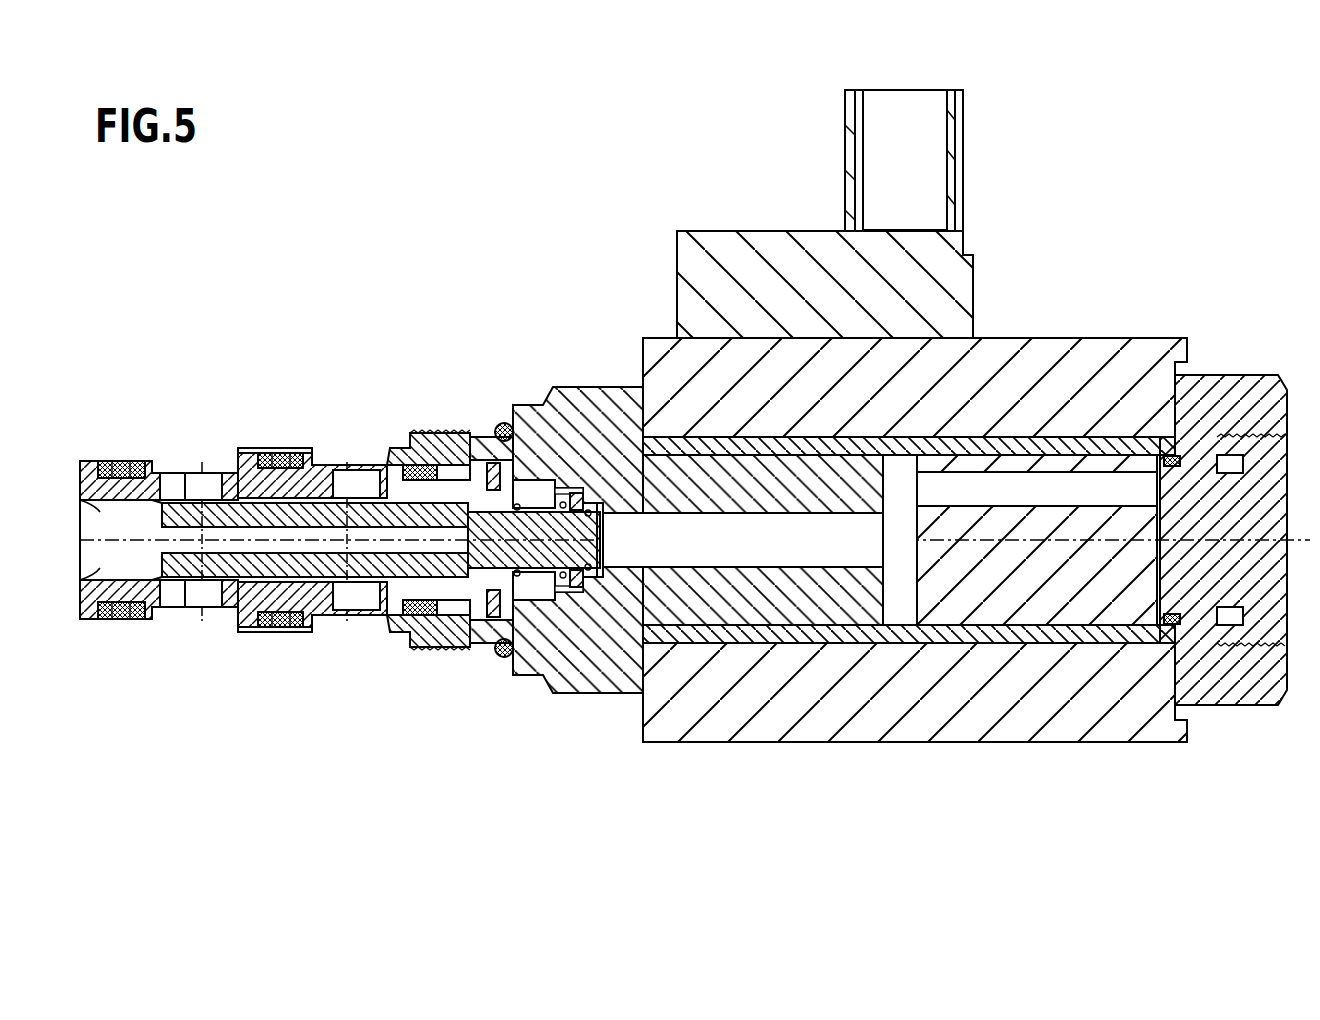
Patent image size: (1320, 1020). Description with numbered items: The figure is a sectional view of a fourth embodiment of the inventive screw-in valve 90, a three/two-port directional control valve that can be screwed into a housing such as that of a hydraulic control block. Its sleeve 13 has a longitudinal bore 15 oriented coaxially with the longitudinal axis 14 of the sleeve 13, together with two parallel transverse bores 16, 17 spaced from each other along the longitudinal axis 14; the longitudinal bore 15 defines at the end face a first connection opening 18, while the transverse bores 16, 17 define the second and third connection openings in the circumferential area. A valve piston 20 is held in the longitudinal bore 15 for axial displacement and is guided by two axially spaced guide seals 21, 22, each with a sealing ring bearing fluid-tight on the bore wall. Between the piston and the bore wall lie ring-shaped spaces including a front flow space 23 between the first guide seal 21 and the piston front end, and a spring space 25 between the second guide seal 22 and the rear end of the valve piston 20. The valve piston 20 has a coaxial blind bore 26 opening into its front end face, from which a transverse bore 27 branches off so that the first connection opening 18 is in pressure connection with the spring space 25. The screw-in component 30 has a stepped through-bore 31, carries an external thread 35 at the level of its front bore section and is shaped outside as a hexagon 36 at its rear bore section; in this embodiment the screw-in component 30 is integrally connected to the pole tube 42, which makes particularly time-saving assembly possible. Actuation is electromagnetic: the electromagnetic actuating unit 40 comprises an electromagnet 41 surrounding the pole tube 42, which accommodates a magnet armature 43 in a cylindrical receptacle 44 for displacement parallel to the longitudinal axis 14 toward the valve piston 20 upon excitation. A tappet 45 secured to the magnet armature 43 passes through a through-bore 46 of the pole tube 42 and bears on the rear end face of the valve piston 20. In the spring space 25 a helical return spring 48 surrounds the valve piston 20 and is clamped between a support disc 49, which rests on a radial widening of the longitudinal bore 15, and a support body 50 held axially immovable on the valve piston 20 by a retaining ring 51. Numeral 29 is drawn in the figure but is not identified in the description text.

The sleeve 13 is at (300, 433).
The longitudinal axis 14 is at (88, 540).
The longitudinal bore 15 is at (88, 568).
The transverse bore 16 is at (190, 612).
The transverse bore 17 is at (332, 612).
The first connection opening 18 is at (88, 512).
The valve piston 20 is at (238, 582).
The guide seal 21 is at (200, 503).
The guide seal 22 is at (338, 463).
The front flow space 23 is at (158, 578).
The spring space 25 is at (470, 590).
The blind bore 26 is at (153, 500).
The transverse bore 27 is at (425, 465).
The seal ring 29 is at (355, 578).
The screw-in component 30 is at (530, 392).
The stepped through-bore 31 is at (398, 602).
The external thread 35 is at (418, 446).
The hexagon 36 is at (596, 388).
The electromagnetic actuating unit 40 is at (1070, 325).
The electromagnet 41 is at (1140, 350).
The pole tube 42 is at (928, 424).
The magnet armature 43 is at (1001, 606).
The cylindrical receptacle 44 is at (900, 622).
The tappet 45 is at (786, 558).
The through-bore 46 is at (702, 562).
The helical return spring 48 is at (493, 462).
The support disc 49 is at (395, 508).
The support body 50 is at (590, 590).
The retaining ring 51 is at (603, 548).
The screw-in valve 90 is at (1024, 222).